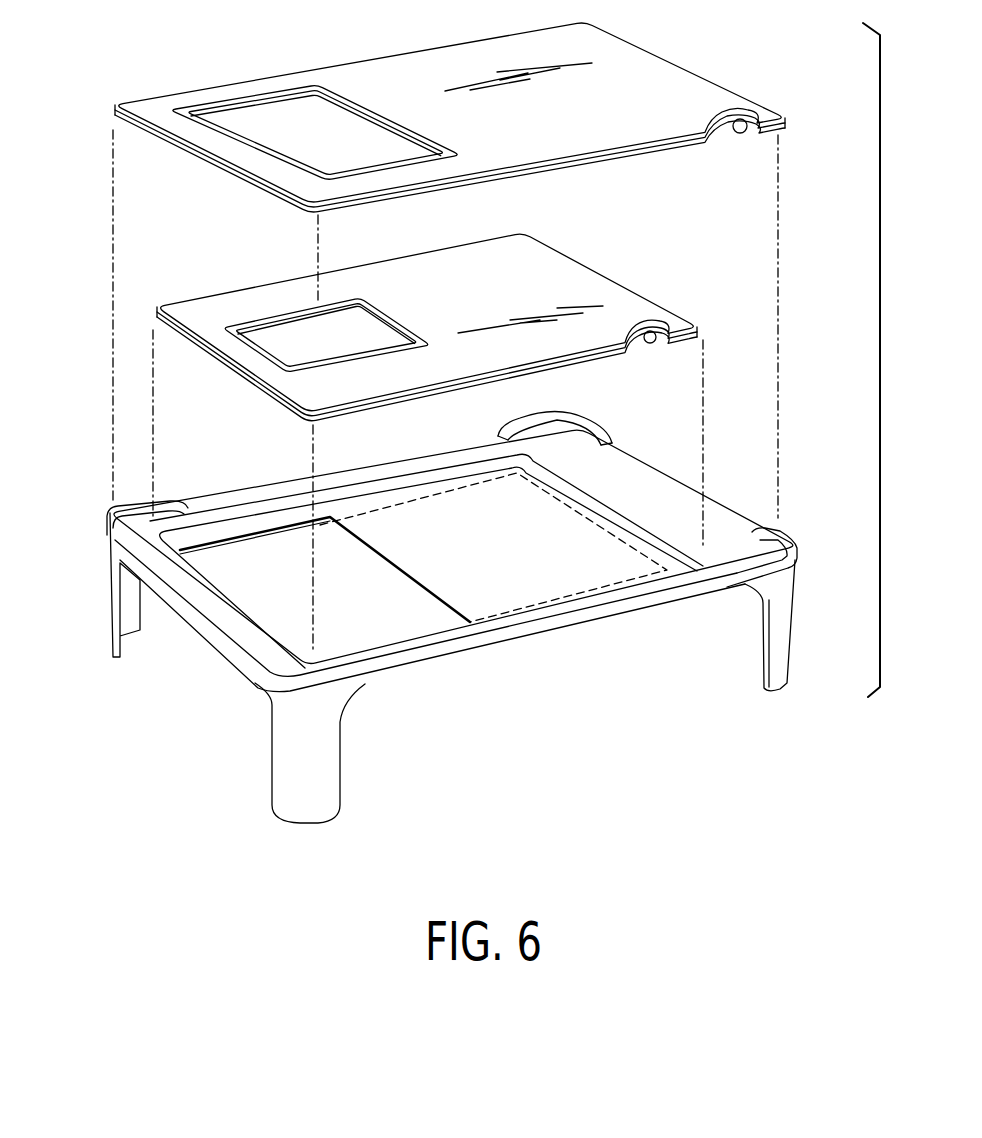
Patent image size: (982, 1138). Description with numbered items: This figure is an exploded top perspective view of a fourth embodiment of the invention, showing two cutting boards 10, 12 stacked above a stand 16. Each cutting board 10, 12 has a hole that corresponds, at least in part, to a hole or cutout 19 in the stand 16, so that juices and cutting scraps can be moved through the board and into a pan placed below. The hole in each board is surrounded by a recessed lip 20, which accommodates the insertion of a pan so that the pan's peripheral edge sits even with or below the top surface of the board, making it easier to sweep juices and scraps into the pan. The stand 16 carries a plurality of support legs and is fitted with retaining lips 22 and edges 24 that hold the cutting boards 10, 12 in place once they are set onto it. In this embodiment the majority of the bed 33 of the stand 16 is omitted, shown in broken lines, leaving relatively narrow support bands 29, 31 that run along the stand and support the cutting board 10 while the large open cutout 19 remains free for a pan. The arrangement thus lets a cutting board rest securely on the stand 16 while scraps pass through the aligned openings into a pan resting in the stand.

The cutting board 10 is at (637, 68).
The cutting board 12 is at (582, 282).
The stand 16 is at (449, 599).
The hole or cutout 19 is at (268, 560).
The recessed lip 20 is at (243, 104).
The retaining lips 22 is at (110, 517).
The edges 24 is at (420, 470).
The support bands 29 is at (223, 620).
The support bands 31 is at (468, 477).
The bed 33 is at (498, 602).